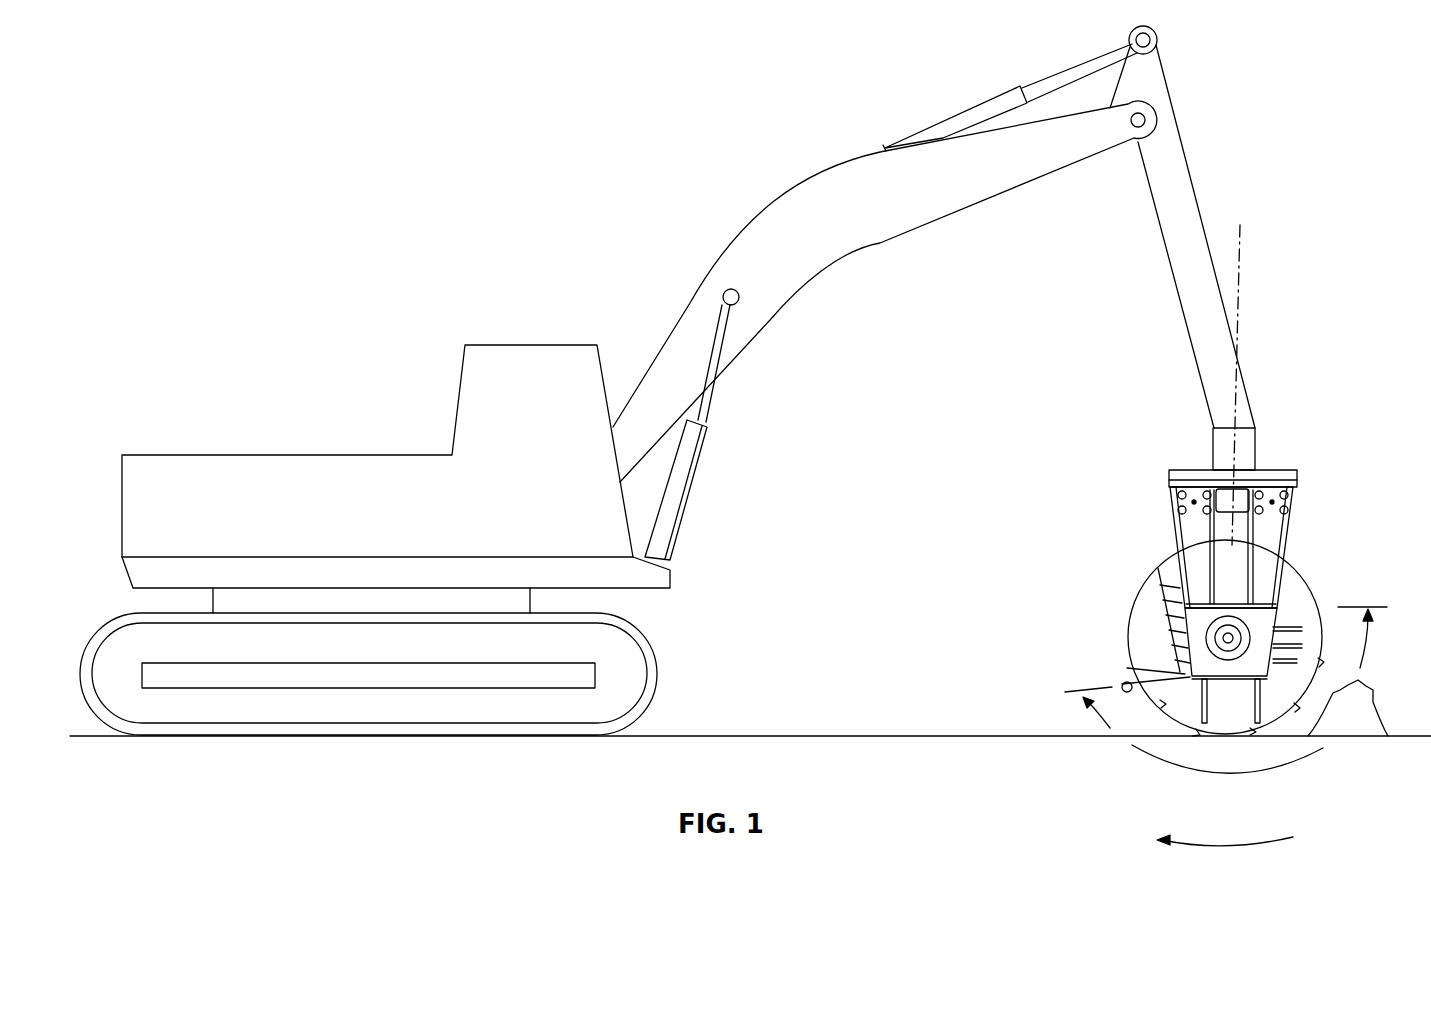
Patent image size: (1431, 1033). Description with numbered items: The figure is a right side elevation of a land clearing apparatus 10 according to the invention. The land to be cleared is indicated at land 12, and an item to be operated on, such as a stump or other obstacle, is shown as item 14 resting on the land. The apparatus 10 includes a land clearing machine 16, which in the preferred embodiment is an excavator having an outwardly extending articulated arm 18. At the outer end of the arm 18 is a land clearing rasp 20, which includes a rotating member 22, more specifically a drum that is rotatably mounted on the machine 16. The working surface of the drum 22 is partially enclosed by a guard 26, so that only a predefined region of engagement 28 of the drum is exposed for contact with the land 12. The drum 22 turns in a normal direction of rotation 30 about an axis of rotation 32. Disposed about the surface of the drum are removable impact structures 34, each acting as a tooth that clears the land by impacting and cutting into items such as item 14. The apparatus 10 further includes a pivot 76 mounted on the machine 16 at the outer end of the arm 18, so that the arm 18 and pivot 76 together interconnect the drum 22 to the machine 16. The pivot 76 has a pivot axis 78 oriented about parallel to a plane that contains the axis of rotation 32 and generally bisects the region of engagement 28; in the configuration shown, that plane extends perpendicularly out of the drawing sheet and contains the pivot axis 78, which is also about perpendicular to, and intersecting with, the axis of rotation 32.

The land clearing apparatus 10 is at (362, 281).
The land 12 is at (963, 735).
The item 14 is at (1388, 735).
The land clearing machine 16 is at (408, 529).
The articulated arm 18 is at (1077, 143).
The land clearing rasp 20 is at (1140, 505).
The rotating member 22 is at (1172, 727).
The guard 26 is at (1303, 587).
The region of engagement 28 is at (1262, 773).
The normal direction of rotation 30 is at (1233, 847).
The axis of rotation 32 is at (1223, 637).
The removable impact structures 34 is at (1322, 663).
The pivot 76 is at (1257, 448).
The pivot axis 78 is at (1255, 285).